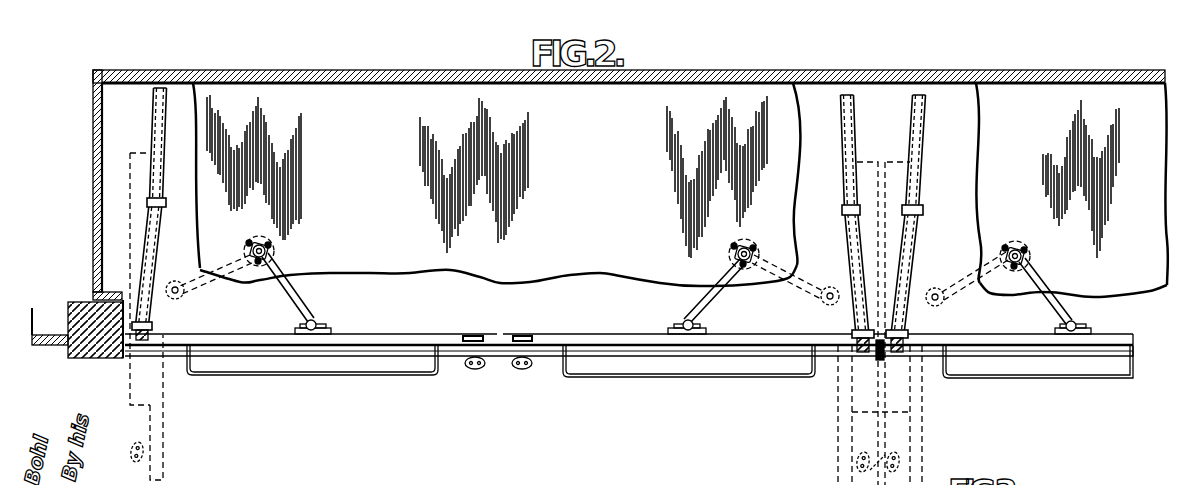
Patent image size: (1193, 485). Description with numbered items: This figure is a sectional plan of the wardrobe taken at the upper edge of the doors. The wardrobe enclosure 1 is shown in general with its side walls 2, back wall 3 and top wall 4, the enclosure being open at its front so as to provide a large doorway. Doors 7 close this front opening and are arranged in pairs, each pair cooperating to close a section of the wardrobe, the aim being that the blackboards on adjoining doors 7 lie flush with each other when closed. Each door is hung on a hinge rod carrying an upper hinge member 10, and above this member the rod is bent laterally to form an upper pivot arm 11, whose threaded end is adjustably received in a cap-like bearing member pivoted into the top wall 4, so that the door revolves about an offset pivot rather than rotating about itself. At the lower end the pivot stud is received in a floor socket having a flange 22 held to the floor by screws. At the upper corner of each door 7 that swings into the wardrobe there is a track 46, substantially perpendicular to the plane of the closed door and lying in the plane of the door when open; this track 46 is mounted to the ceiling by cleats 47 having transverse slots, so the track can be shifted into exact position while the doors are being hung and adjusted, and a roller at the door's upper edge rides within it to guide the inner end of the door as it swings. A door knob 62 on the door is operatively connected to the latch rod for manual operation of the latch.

The wardrobe enclosure 1 is at (93, 232).
The side walls 2 is at (93, 155).
The back wall 3 is at (290, 70).
The top wall 4 is at (390, 108).
The doors 7 is at (375, 335).
The upper hinge member 10 is at (318, 324).
The upper pivot arm 11 is at (192, 290).
The flange 22 is at (274, 256).
The track 46 is at (152, 106).
The cleats 47 is at (147, 202).
The door knob 62 is at (130, 449).